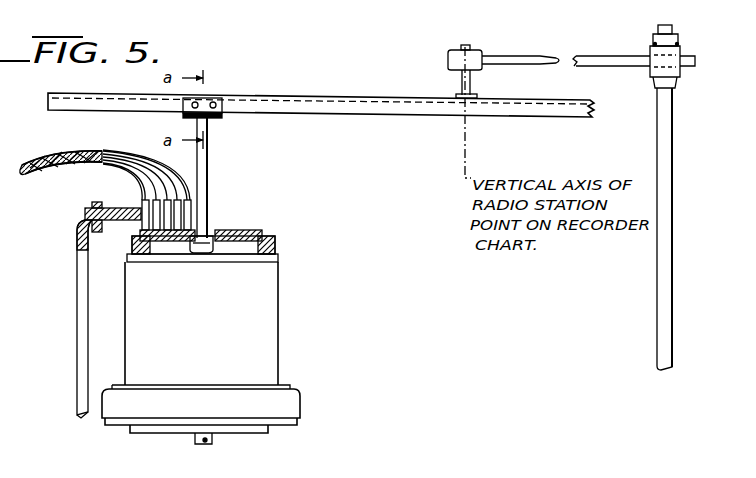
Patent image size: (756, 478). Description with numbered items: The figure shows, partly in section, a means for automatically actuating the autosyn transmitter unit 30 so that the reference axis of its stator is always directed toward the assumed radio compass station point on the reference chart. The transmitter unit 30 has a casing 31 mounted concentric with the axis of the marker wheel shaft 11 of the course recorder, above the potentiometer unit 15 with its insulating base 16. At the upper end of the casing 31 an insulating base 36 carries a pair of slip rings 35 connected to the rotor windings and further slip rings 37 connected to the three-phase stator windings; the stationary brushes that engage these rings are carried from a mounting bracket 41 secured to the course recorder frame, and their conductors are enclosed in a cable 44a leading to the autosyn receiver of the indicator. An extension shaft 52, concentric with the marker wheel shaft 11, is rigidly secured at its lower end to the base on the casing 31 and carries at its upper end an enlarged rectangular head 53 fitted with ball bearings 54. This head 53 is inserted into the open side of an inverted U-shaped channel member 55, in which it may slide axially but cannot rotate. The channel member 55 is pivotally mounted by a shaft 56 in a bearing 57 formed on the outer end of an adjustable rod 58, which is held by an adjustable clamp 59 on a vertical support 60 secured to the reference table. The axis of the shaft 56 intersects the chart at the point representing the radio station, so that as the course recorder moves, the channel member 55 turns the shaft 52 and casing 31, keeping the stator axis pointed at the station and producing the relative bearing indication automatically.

The marker wheel shaft 11 is at (207, 441).
The potentiometer unit 15 is at (303, 404).
The base 16 is at (299, 419).
The autosyn transmitter unit 30 is at (226, 323).
The casing 31 is at (279, 360).
The slip rings 35 is at (246, 230).
The base 36 is at (279, 250).
The slip rings 37 is at (230, 231).
The mounting bracket 41 is at (78, 303).
The cable 44a is at (72, 156).
The extension shaft 52 is at (207, 167).
The enlarged rectangular head 53 is at (222, 116).
The ball bearings 54 is at (197, 102).
The inverted U-shaped channel member 55 is at (301, 108).
The shaft 56 is at (471, 90).
The bearing 57 is at (470, 56).
The adjustable rod 58 is at (519, 58).
The adjustable clamp 59 is at (683, 46).
The vertical support 60 is at (674, 153).